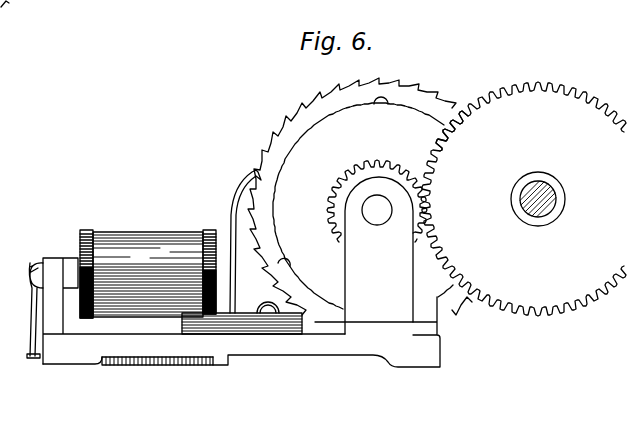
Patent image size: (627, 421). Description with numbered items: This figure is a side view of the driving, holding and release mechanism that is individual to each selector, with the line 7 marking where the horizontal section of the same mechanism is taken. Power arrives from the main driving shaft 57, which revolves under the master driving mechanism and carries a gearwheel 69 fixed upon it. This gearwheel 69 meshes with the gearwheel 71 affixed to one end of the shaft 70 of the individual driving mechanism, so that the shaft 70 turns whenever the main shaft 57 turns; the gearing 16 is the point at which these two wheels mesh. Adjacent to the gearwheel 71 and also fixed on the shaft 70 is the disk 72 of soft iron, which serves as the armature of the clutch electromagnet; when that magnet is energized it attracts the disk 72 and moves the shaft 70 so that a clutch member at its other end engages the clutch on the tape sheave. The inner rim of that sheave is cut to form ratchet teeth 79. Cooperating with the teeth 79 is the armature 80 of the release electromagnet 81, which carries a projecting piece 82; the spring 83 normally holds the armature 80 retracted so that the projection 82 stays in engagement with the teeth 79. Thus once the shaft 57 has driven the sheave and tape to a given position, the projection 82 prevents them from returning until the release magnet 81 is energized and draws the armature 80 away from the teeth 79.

The direction of movement indicator 7 is at (176, 206).
The gear train meshing point 16 is at (428, 96).
The shaft 57 is at (542, 176).
The gearwheel 69 is at (557, 88).
The shaft 70 is at (376, 225).
The gearwheel 71 is at (233, 272).
The disk 72 is at (377, 187).
The teeth 79 is at (424, 79).
The armature 80 is at (242, 270).
The electromagnet 81 is at (146, 244).
The projecting piece 82 is at (247, 176).
The spring 83 is at (170, 364).